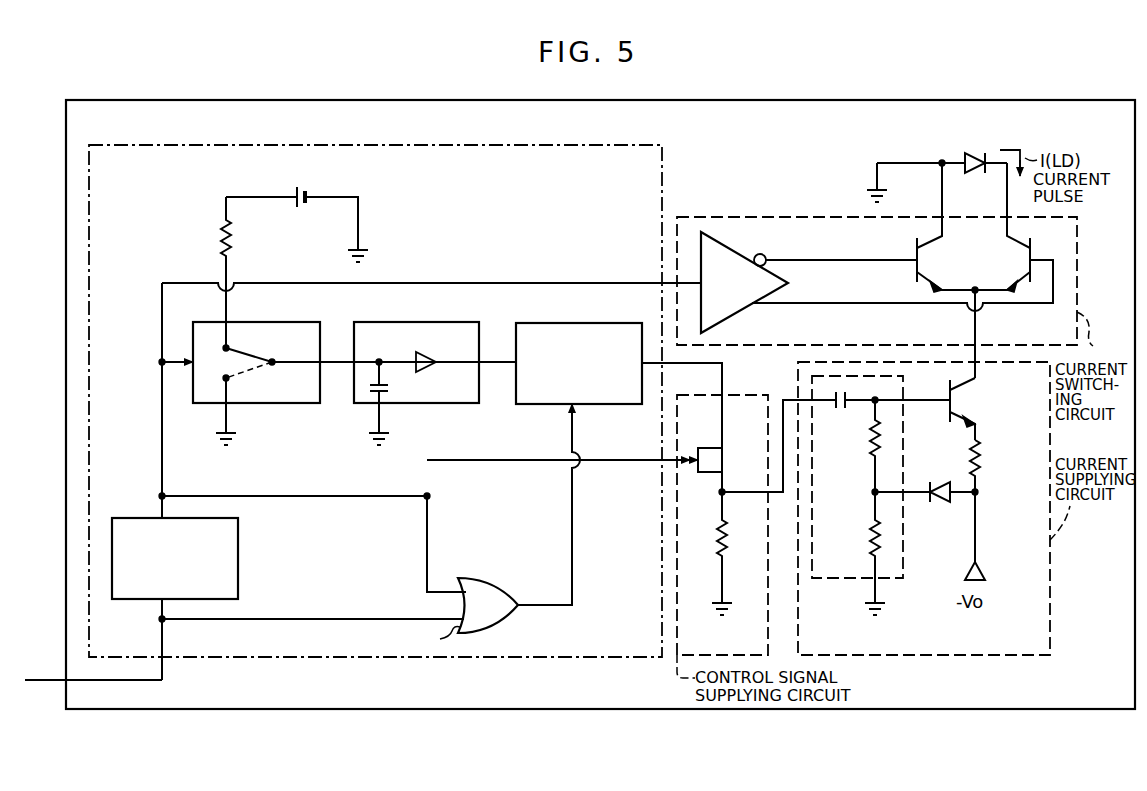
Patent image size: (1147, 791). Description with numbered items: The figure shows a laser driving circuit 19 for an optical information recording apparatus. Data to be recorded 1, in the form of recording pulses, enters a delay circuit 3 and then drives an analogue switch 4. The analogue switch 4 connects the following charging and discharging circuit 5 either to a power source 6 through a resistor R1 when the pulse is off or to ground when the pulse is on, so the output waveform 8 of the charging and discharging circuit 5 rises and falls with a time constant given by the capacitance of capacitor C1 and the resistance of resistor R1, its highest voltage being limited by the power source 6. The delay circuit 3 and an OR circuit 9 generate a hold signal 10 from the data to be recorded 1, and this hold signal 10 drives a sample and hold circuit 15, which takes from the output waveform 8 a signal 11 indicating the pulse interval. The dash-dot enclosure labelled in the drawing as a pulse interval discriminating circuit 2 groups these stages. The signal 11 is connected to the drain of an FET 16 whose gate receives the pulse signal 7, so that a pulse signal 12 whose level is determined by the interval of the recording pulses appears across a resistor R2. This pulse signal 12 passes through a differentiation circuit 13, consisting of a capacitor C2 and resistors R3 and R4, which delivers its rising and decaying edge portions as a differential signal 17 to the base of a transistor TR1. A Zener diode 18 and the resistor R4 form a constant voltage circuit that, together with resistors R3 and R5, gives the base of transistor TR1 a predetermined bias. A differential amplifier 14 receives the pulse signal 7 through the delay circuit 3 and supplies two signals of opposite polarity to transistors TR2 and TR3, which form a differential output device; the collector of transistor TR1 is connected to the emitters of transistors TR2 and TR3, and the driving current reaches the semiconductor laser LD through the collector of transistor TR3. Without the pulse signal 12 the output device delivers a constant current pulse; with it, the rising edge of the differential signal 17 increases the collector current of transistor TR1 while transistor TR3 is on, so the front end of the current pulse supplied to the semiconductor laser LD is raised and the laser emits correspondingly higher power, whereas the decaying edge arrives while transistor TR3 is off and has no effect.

The data to be recorded 1 is at (40, 682).
The pulse interval discriminating circuit 2 is at (128, 145).
The delay circuit 3 is at (238, 557).
The analogue switch 4 is at (272, 403).
The charging and discharging circuit 5 is at (430, 403).
The power source 6 is at (300, 195).
The pulse signal 7 is at (200, 496).
The output waveform 8 is at (498, 366).
The OR circuit 9 is at (505, 620).
The hold signal 10 is at (572, 533).
The signal indicating the pulse interval 11 is at (722, 378).
The pulse signal 12 is at (743, 488).
The differentiation circuit 13 is at (825, 578).
The differential amplifier 14 is at (723, 244).
The sample and hold circuit 15 is at (618, 404).
The FET 16 is at (700, 475).
The differential signal 17 is at (925, 402).
The Zener diode 18 is at (938, 500).
The laser driving circuit 19 is at (785, 709).
The resistor R1 is at (222, 239).
The resistor R2 is at (727, 540).
The resistor R3 is at (870, 446).
The resistor R4 is at (870, 536).
The resistor R5 is at (982, 458).
The capacitor C1 is at (389, 388).
The capacitor C2 is at (838, 410).
The transistor TR1 is at (965, 386).
The transistor TR2 is at (923, 239).
The transistor TR3 is at (1012, 243).
The semiconductor laser LD is at (974, 150).